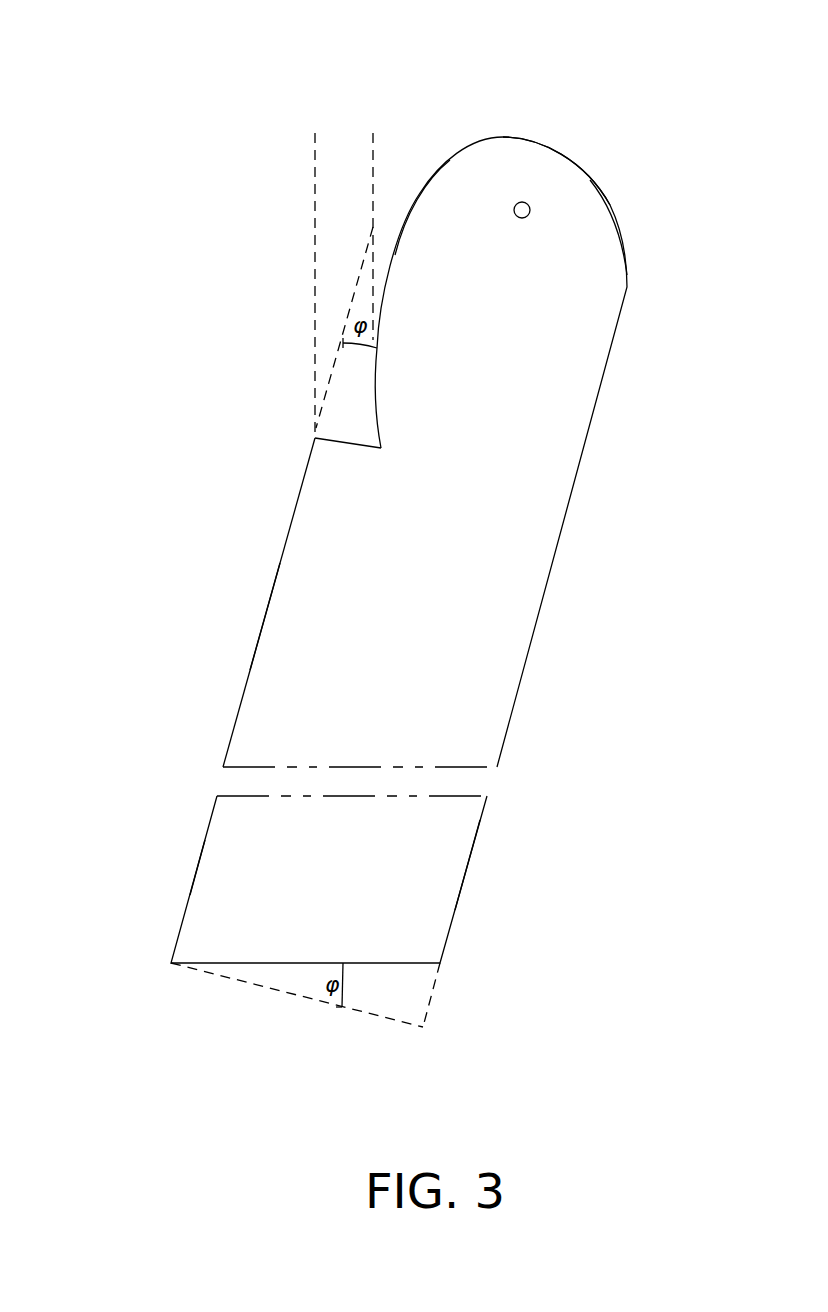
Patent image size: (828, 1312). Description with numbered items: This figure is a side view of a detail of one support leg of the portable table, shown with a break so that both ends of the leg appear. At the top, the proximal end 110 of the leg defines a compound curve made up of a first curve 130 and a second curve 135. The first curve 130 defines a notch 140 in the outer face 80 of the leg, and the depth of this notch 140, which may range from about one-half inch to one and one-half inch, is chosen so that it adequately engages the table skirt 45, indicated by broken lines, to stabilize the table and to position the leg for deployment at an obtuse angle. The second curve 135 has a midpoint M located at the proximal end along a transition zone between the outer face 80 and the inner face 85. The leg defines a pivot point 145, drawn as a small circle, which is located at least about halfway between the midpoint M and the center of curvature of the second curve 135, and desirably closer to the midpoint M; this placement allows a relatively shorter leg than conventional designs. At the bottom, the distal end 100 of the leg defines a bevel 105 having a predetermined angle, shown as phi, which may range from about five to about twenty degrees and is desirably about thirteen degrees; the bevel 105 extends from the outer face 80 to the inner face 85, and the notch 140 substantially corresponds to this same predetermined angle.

The proximal end 110 is at (455, 75).
The first curve 130 is at (447, 163).
The second curve 135 is at (618, 228).
The midpoint M is at (586, 152).
The pivot point 145 is at (521, 202).
The table skirt 45 is at (356, 193).
The notch 140 is at (284, 403).
The outer face 80 is at (250, 667).
The distal end 100 is at (536, 909).
The inner face 85 is at (468, 877).
The bevel 105 is at (381, 994).